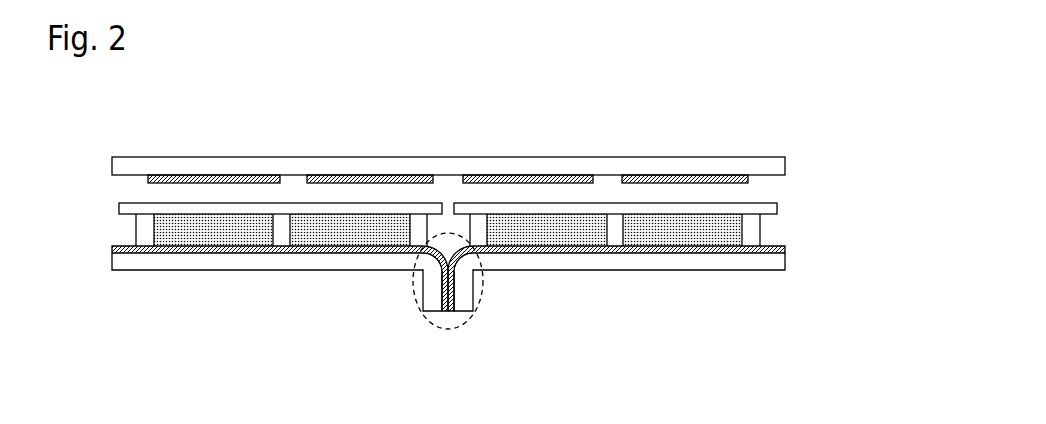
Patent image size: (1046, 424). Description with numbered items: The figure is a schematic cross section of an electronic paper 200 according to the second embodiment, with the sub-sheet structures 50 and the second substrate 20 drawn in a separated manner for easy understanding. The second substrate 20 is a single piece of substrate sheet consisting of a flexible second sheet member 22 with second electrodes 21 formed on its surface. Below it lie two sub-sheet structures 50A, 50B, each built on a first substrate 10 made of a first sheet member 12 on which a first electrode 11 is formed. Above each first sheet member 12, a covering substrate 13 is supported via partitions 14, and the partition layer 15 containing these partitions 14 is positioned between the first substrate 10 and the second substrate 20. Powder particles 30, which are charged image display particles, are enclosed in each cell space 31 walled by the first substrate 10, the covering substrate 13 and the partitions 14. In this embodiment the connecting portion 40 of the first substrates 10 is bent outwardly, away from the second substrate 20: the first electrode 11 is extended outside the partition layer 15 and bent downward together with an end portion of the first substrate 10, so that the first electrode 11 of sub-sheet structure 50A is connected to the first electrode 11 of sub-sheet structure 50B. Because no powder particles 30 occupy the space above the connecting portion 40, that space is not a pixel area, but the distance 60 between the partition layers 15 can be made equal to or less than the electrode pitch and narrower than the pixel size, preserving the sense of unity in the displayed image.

The electronic paper 200 is at (741, 128).
The second substrate 20 is at (813, 153).
The second sheet member 22 is at (157, 167).
The second electrodes 21 is at (217, 176).
The distance 60 is at (468, 145).
The partition layer 15 is at (108, 228).
The powder particles 30 is at (190, 232).
The cell space 31 is at (328, 242).
The covering substrate 13 is at (282, 208).
The partitions 14 is at (287, 225).
The first substrate 10 is at (813, 247).
The first electrode 11 is at (162, 256).
The first sheet member 12 is at (345, 260).
The connecting portion 40 is at (482, 283).
The sub-sheet structures 50 is at (450, 377).
The sub-sheet structure 50A is at (448, 350).
The sub-sheet structure 50B is at (785, 348).